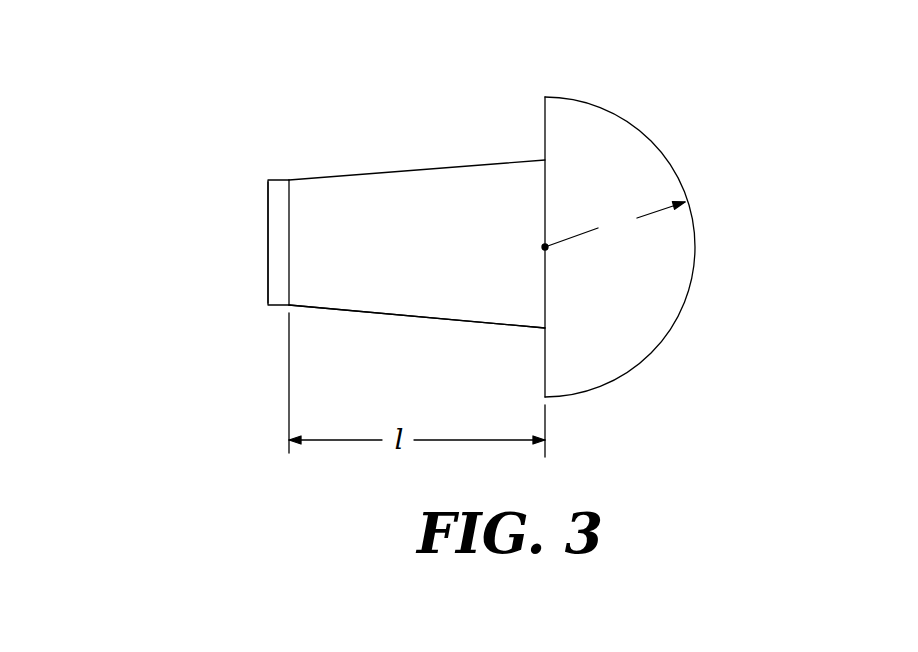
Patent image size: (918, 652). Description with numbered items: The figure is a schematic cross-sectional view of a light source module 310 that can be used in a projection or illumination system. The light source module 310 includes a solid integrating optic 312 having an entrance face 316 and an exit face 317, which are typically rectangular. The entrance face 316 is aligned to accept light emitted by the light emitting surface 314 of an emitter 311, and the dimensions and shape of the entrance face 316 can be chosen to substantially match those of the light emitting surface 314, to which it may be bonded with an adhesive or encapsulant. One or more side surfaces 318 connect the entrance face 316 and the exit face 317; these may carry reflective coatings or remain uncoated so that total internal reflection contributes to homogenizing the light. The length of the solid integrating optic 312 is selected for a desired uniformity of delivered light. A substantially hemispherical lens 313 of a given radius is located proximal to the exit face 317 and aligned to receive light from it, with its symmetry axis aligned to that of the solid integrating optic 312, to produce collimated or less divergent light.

The light source module 310 is at (160, 88).
The emitter 311 is at (280, 200).
The solid integrating optic 312 is at (450, 190).
The lens 313 is at (602, 127).
The light emitting surface 314 is at (289, 272).
The entrance face 316 is at (288, 233).
The exit face 317 is at (543, 173).
The side surface 318 is at (385, 315).